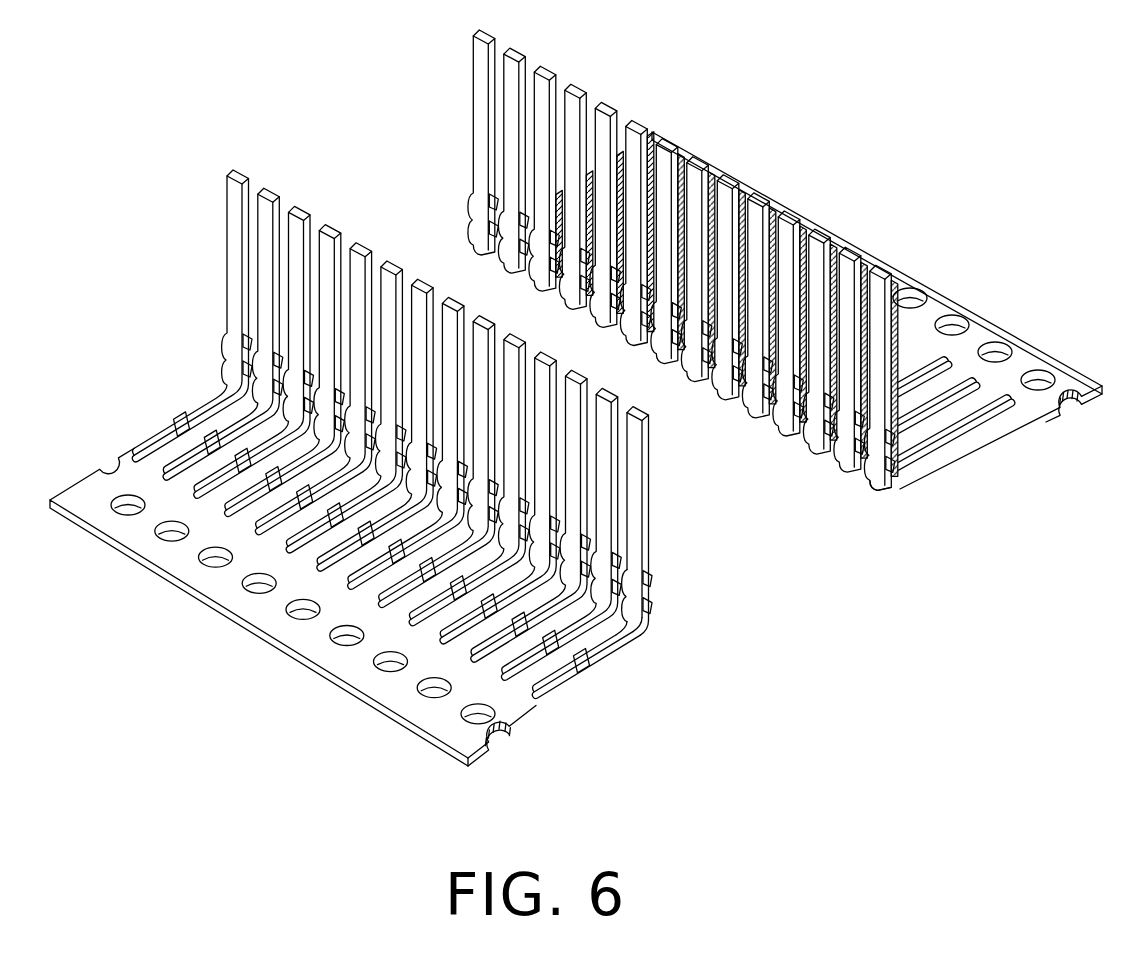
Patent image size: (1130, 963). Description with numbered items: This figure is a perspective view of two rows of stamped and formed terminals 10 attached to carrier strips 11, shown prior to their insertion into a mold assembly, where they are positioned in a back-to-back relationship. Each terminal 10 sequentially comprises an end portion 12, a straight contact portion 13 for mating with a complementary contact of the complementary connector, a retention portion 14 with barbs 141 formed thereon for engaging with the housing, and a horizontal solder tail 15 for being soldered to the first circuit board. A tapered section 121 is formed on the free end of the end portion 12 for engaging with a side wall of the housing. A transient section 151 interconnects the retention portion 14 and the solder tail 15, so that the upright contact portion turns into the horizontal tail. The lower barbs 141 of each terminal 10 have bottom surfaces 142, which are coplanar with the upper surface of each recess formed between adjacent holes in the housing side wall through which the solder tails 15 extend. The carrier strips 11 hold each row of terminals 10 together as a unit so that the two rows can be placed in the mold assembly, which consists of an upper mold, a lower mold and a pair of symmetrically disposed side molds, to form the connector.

The terminal 10 is at (579, 402).
The carrier strip 11 is at (503, 720).
The end portion 12 is at (636, 558).
The tapered section 121 is at (640, 407).
The straight contact portion 13 is at (647, 518).
The retention portion 14 is at (632, 593).
The barbs 141 is at (641, 623).
The bottom surfaces 142 is at (868, 473).
The solder tail 15 is at (590, 656).
The transient section 151 is at (627, 632).